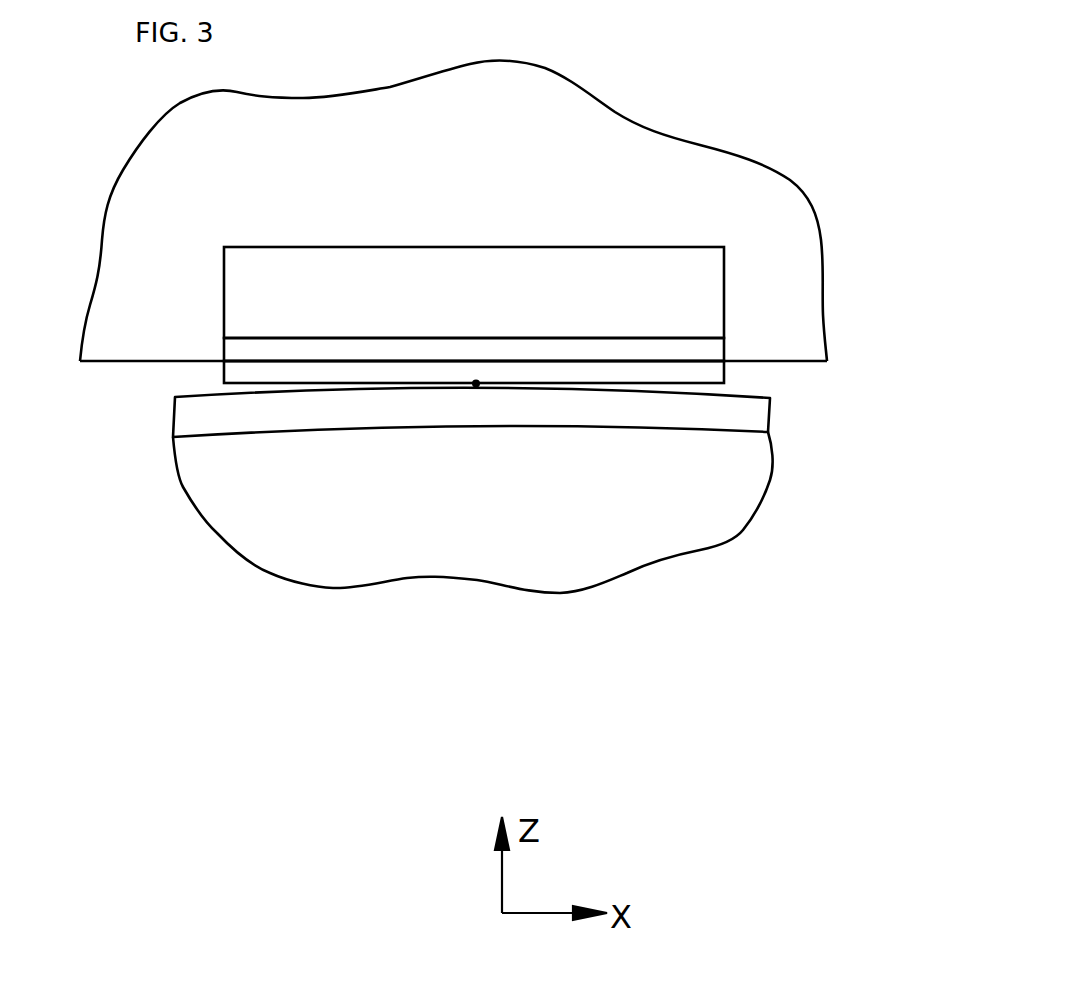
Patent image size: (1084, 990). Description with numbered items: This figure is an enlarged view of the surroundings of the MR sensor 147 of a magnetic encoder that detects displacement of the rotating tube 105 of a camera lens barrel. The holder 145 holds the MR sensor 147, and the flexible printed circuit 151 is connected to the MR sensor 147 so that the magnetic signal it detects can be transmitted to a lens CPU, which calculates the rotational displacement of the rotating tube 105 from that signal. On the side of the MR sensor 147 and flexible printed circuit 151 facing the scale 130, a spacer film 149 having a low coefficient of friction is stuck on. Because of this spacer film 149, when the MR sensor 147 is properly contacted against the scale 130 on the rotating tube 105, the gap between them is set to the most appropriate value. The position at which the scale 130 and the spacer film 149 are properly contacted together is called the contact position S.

The holder 145 is at (725, 173).
The MR sensor 147 is at (710, 296).
The flexible printed circuit 151 is at (712, 350).
The spacer film 149 is at (712, 373).
The scale 130 is at (753, 417).
The rotating tube 105 is at (693, 532).
The contact position S is at (476, 388).